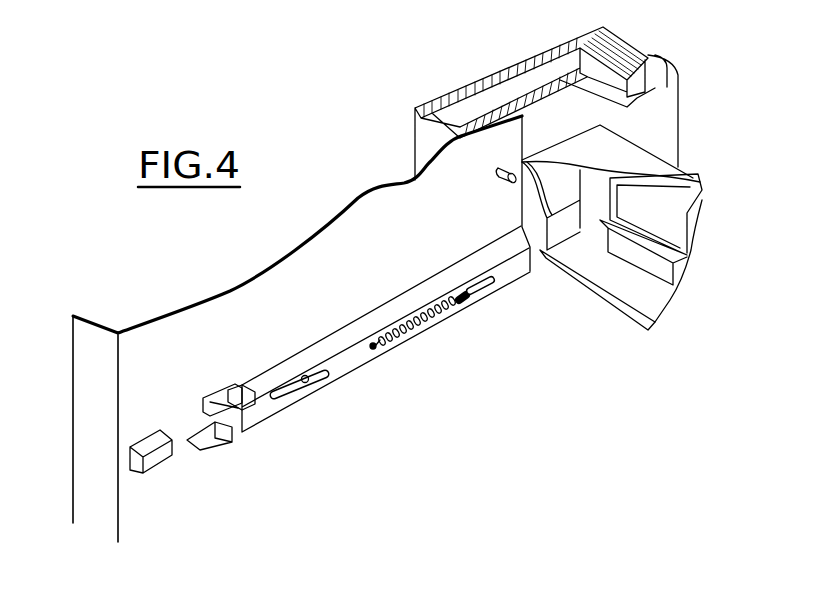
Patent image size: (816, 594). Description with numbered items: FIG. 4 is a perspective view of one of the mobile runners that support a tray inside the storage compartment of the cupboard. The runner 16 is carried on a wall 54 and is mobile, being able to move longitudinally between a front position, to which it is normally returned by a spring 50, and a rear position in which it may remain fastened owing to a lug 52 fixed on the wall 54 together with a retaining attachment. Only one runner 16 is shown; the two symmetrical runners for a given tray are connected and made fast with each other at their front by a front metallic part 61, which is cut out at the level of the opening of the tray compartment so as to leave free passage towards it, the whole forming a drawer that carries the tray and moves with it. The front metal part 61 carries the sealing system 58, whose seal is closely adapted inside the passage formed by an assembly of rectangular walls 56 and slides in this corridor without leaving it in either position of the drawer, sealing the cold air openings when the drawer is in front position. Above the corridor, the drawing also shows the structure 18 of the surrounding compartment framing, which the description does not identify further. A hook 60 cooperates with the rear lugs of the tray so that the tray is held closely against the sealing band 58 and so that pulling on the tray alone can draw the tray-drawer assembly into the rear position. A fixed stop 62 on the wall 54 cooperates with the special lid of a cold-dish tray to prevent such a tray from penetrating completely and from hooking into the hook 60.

The runner 16 is at (358, 352).
The frame 18 is at (700, 89).
The spring 50 is at (427, 325).
The lug 52 is at (302, 383).
The wall 54 is at (223, 295).
The rectangular walls 56 is at (635, 158).
The sealing system 58 is at (693, 271).
The hook 60 is at (232, 436).
The front metallic part 61 is at (555, 203).
The fixed stop 62 is at (495, 182).